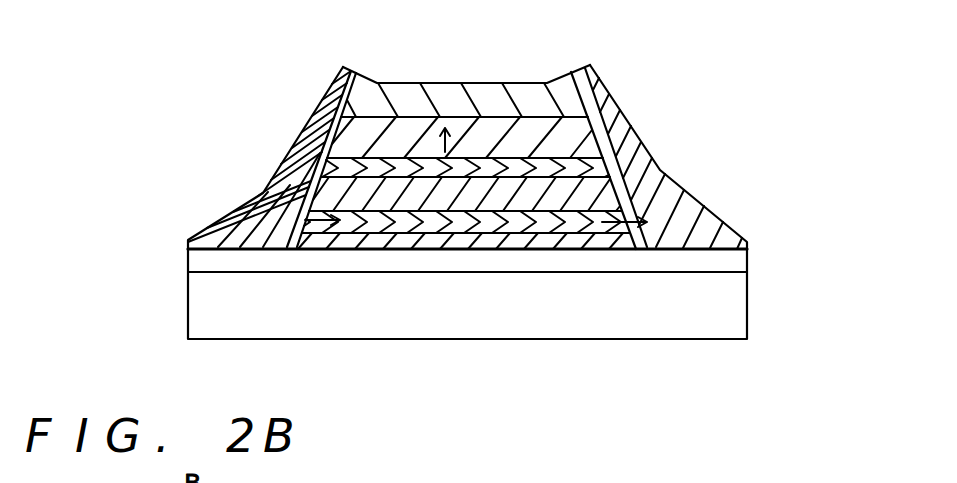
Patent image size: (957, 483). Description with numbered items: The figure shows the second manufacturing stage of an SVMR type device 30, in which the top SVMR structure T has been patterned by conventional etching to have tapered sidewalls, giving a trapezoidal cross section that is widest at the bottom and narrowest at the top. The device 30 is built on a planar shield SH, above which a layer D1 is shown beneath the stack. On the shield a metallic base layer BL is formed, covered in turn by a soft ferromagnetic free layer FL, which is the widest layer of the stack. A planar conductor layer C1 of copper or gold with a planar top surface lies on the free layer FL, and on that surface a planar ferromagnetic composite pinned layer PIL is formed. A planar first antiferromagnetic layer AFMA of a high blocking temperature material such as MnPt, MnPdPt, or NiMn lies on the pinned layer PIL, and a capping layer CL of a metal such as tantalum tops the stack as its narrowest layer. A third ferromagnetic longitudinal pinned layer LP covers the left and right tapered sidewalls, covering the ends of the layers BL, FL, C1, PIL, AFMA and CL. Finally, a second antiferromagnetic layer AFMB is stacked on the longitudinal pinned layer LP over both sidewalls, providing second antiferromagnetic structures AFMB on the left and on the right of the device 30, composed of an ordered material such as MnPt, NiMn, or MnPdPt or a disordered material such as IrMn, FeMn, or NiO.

The top SVMR structure T is at (265, 49).
The capping layer CL is at (430, 93).
The first antiferromagnetic layer AFMA is at (503, 130).
The second antiferromagnetic layer AFMB is at (317, 122).
The conductor layer C1 is at (358, 187).
The pinned layer PIL is at (590, 168).
The longitudinal pinned layer LP is at (280, 223).
The free layer FL is at (361, 220).
The base layer BL is at (512, 240).
The dielectric layer D1 is at (210, 263).
The planar shield SH is at (732, 306).
The SVMR type device 30 is at (234, 373).